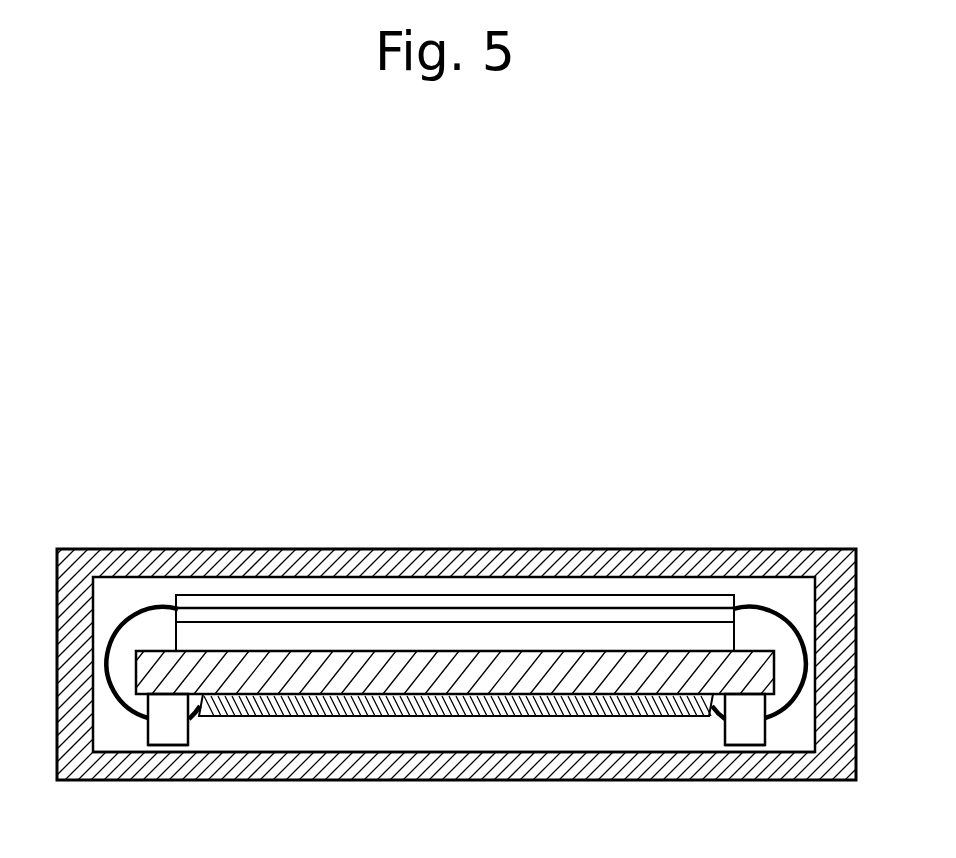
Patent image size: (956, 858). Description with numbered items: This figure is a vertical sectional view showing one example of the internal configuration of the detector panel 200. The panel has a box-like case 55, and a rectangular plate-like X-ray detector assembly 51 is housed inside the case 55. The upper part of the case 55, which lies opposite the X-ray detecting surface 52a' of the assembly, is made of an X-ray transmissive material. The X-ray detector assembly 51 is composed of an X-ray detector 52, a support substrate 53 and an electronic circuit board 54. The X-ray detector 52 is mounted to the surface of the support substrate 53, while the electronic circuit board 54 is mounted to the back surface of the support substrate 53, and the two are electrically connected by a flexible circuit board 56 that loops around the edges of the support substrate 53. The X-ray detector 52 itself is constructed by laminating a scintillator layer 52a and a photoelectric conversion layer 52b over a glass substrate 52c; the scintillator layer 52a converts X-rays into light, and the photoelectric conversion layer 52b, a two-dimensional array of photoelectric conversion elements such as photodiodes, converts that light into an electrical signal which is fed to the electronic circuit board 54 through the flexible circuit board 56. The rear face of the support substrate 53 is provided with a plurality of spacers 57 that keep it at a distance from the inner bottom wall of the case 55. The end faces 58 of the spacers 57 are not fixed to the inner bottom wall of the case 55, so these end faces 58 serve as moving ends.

The detector panel 200 is at (473, 290).
The X-ray detector assembly 51 is at (778, 604).
The X-ray detector 52 is at (455, 552).
The scintillator layer 52a is at (455, 553).
The X-ray detecting surface 52a' is at (455, 524).
The photoelectric conversion layer 52b is at (329, 618).
The glass substrate 52c is at (453, 637).
The support substrate 53 is at (447, 672).
The electronic circuit board 54 is at (600, 700).
The case 55 is at (357, 765).
The flexible circuit board 56 is at (113, 698).
The spacers 57 is at (167, 732).
The end faces 58 is at (184, 748).